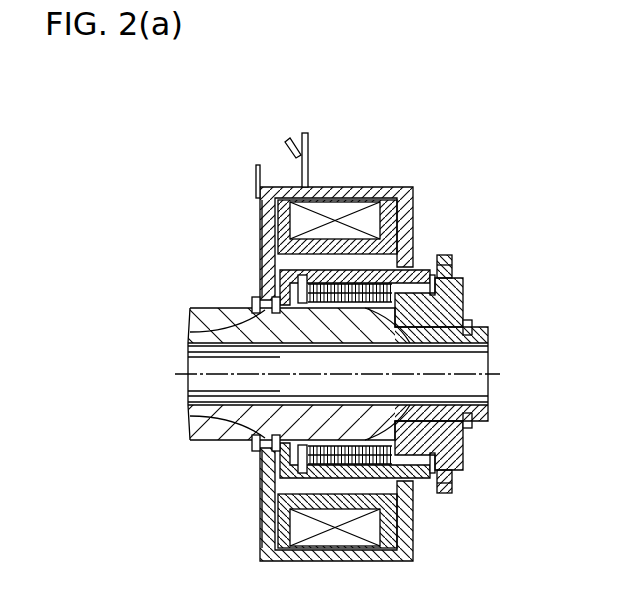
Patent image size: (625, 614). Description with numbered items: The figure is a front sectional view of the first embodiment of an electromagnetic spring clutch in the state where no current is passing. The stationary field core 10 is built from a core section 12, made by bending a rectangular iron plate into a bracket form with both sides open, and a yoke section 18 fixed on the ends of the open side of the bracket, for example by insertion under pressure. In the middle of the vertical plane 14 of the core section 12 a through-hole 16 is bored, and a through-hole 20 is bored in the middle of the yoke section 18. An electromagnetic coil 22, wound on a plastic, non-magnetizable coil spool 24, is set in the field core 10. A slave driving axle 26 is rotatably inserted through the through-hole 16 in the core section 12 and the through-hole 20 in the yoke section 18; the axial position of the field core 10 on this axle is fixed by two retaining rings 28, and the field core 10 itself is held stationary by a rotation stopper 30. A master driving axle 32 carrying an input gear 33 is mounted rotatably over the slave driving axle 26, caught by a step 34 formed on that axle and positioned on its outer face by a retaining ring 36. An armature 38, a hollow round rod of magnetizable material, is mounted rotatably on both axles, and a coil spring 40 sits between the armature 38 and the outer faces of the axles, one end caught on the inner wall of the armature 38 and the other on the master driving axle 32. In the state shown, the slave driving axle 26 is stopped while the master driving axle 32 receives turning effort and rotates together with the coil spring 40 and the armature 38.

The field core 10 is at (364, 172).
The core section 12 is at (281, 185).
The vertical plane 14 is at (262, 251).
The through-hole 16 is at (190, 334).
The yoke section 18 is at (420, 210).
The through-hole 20 is at (417, 268).
The electromagnetic coil 22 is at (413, 188).
The coil spool 24 is at (287, 216).
The slave driving axle 26 is at (190, 322).
The retaining rings 28 is at (252, 301).
The rotation stopper 30 is at (257, 177).
The master driving axle 32 is at (463, 283).
The input gear 33 is at (453, 256).
The step 34 is at (488, 344).
The retaining ring 36 is at (472, 320).
The armature 38 is at (458, 266).
The coil spring 40 is at (488, 378).